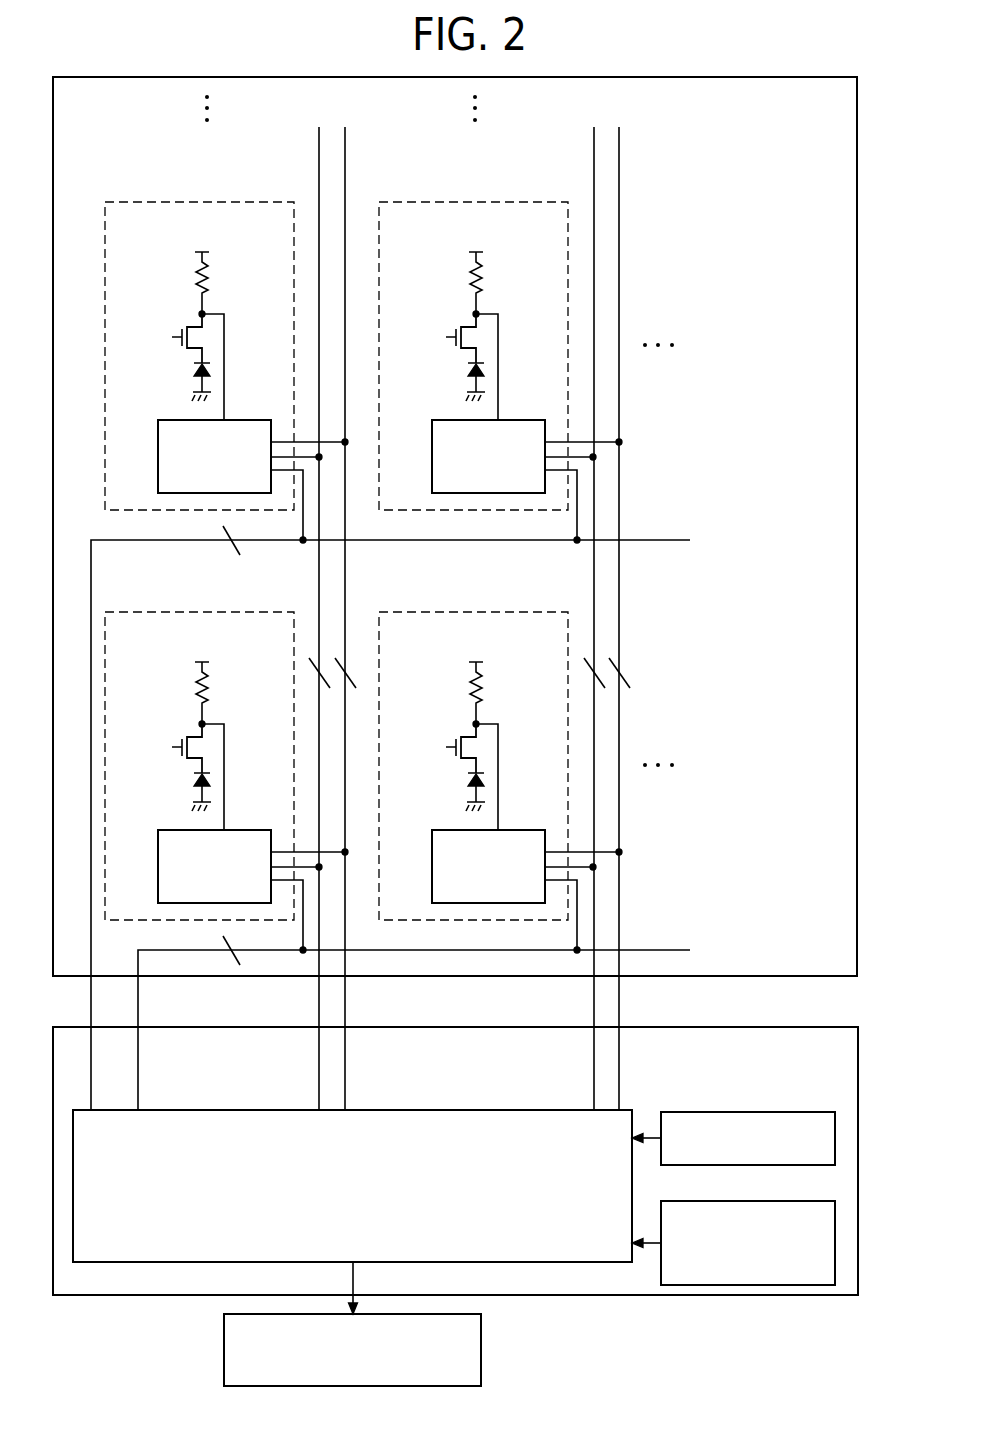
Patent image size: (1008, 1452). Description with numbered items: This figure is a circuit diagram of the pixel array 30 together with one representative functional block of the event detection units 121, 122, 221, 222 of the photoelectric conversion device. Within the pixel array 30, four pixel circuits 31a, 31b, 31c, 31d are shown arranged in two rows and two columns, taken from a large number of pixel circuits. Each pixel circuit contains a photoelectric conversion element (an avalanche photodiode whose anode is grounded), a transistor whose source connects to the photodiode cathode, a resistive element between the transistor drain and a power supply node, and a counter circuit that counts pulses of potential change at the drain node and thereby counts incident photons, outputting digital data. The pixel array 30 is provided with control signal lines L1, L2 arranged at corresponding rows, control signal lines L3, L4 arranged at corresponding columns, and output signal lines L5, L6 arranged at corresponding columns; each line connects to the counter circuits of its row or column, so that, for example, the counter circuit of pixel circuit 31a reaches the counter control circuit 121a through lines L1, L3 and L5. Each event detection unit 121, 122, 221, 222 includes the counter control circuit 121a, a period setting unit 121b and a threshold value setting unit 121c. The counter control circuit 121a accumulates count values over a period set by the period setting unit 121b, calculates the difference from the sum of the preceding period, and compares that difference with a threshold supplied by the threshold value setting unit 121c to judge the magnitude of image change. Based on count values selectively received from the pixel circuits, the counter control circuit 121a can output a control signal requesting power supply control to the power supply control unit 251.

The pixel array 30 is at (767, 77).
The pixel circuit 31a is at (226, 345).
The pixel circuit 31b is at (500, 345).
The pixel circuit 31c is at (226, 755).
The pixel circuit 31d is at (500, 755).
The control signal line L1 is at (667, 540).
The control signal line L2 is at (667, 950).
The control signal line L3 is at (319, 147).
The control signal line L4 is at (593, 147).
The output signal line L5 is at (345, 147).
The output signal line L6 is at (619, 147).
The event detection unit 121 is at (465, 1146).
The event detection unit 122 is at (465, 1146).
The event detection unit 221 is at (465, 1146).
The event detection unit 222 is at (672, 1027).
The counter control circuit 121a is at (219, 1110).
The period setting unit 121b is at (760, 1112).
The threshold value setting unit 121c is at (760, 1201).
The power supply control unit 251 is at (481, 1350).